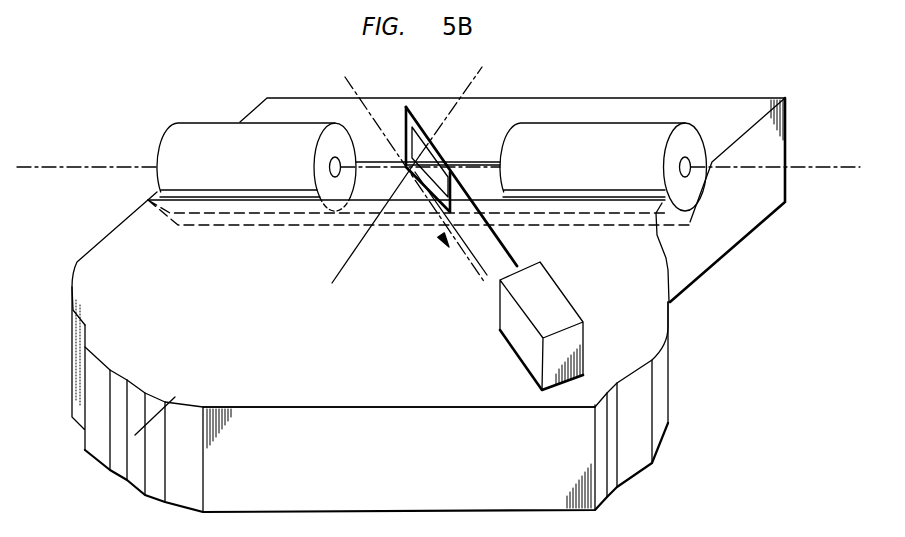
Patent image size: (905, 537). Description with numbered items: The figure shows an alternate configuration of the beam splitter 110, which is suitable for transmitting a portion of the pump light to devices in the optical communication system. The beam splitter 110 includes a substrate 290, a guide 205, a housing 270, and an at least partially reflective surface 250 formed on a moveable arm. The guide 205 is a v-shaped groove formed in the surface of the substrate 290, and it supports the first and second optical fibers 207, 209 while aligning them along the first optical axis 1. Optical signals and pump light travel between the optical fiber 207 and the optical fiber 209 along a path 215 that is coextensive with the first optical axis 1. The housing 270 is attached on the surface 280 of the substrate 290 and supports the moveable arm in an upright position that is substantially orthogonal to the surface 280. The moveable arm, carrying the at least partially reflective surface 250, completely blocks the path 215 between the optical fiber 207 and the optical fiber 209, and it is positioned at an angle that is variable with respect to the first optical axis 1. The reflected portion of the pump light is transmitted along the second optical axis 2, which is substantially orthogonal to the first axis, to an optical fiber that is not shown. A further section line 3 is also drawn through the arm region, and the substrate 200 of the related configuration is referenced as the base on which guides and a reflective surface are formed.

The optical axis 1-1' 1 is at (38, 166).
The optical axis 2-2' 2 is at (480, 68).
The section line 3-3' 3 is at (345, 78).
The beam splitter 110 is at (741, 372).
The substrate 200 is at (510, 257).
The guide 205 is at (691, 223).
The first optical fiber 207 is at (281, 126).
The second optical fiber 209 is at (622, 126).
The path 215 is at (452, 161).
The at least partially reflective surface 250 is at (440, 152).
The housing 270 is at (563, 297).
The surface 280 is at (108, 275).
The substrate 290 is at (416, 465).